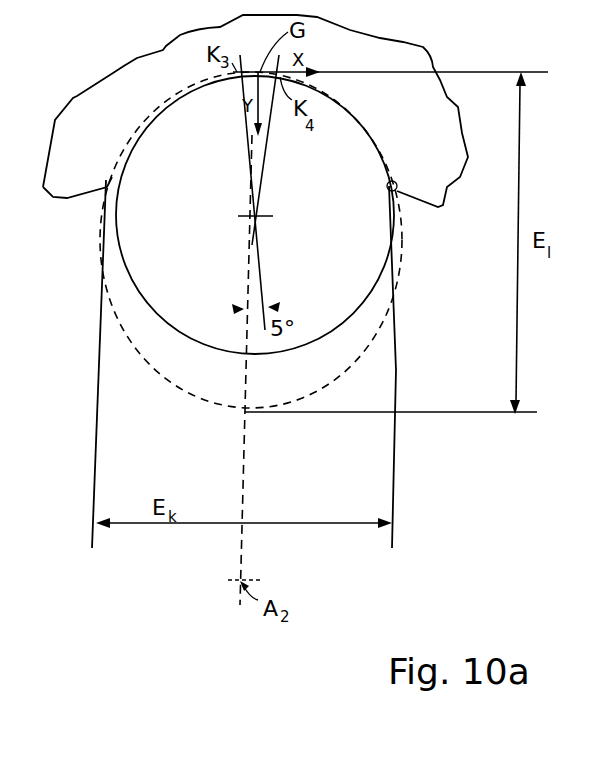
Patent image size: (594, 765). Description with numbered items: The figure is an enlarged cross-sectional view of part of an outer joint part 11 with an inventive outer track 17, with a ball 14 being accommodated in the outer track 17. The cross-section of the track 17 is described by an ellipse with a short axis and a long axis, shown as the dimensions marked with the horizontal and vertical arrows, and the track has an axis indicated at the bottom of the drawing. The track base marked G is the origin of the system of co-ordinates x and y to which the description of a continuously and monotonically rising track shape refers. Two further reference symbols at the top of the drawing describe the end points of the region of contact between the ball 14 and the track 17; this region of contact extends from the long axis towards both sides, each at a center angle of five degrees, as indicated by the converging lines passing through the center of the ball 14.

The outer joint part 11 is at (402, 53).
The ball 14 is at (380, 262).
The outer track 17 is at (396, 184).